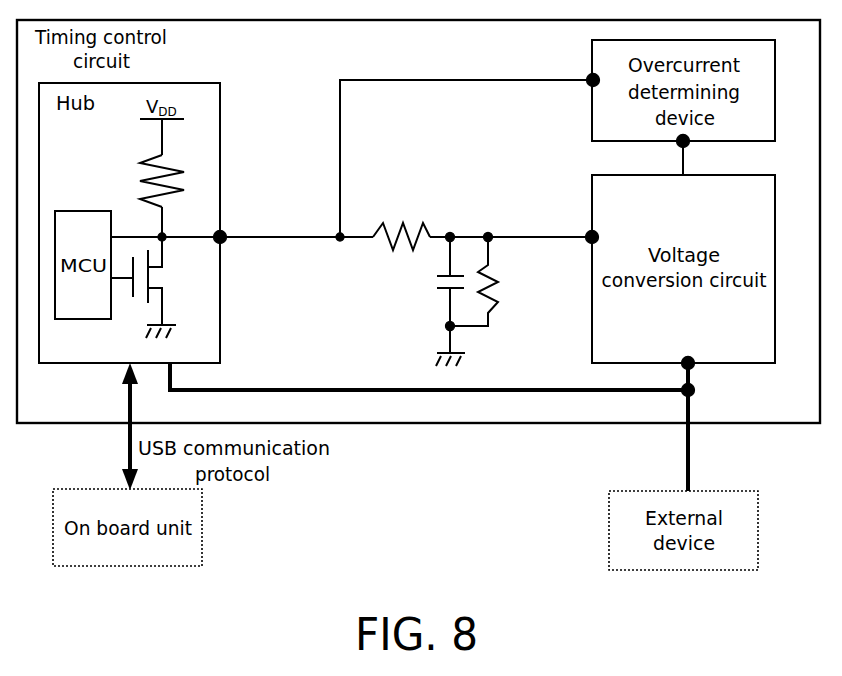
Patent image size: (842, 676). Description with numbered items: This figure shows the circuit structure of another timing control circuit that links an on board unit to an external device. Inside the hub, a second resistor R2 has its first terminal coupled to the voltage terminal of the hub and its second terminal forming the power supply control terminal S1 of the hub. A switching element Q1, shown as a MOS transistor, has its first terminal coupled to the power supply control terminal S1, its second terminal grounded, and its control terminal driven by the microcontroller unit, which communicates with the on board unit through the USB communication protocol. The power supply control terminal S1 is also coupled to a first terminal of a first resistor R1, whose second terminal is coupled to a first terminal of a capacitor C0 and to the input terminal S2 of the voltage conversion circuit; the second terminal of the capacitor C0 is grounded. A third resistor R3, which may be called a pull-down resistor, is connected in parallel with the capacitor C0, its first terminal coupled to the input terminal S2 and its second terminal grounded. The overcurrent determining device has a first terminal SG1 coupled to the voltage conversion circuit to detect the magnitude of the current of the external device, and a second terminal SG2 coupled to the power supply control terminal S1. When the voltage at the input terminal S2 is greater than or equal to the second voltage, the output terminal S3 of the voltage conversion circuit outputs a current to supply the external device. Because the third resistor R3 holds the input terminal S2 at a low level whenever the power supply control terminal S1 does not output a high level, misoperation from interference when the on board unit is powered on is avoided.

The power supply control terminal S1 is at (226, 232).
The input terminal of the voltage conversion circuit S2 is at (585, 233).
The output terminal of the voltage conversion circuit S3 is at (701, 368).
The first terminal of the overcurrent determining device SG1 is at (676, 146).
The second terminal of the overcurrent determining device SG2 is at (587, 75).
The first resistor R1 is at (401, 223).
The second resistor R2 is at (149, 181).
The third resistor R3 is at (488, 280).
The capacitor C0 is at (438, 300).
The switching element Q1 is at (154, 287).